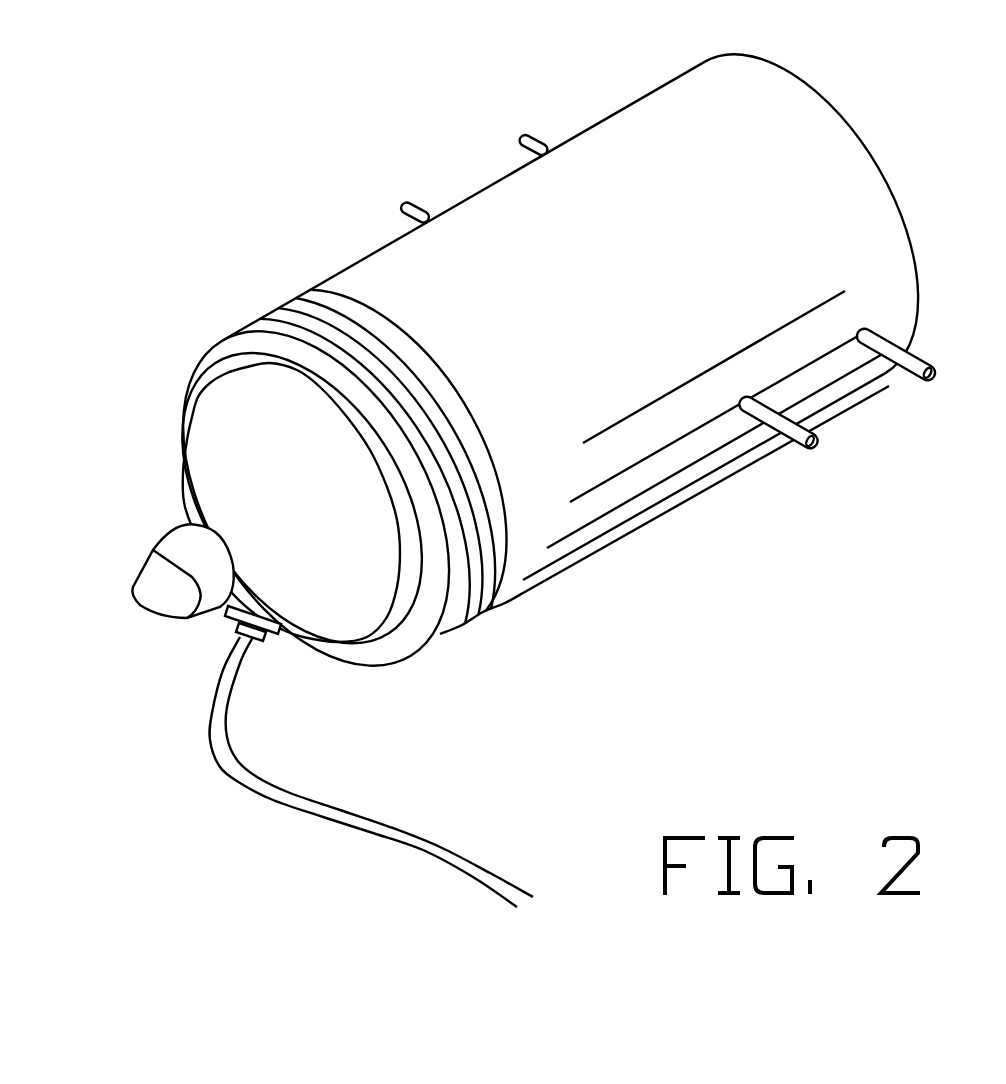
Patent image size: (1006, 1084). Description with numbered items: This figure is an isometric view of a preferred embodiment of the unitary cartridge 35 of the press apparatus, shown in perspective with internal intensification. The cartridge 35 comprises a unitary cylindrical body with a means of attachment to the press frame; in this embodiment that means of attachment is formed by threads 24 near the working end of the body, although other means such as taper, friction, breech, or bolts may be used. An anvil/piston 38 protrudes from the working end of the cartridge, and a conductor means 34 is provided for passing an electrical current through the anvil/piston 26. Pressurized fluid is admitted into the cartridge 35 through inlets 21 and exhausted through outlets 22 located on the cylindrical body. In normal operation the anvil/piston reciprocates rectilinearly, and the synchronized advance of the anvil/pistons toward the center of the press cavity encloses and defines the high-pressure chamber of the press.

The inlets 21 is at (818, 443).
The outlets 22 is at (520, 140).
The threads 24 is at (355, 327).
The anvil/piston 26 is at (150, 590).
The conductor means 34 is at (323, 817).
The unitary cartridge 35 is at (657, 173).
The anvil/piston 38 is at (340, 547).